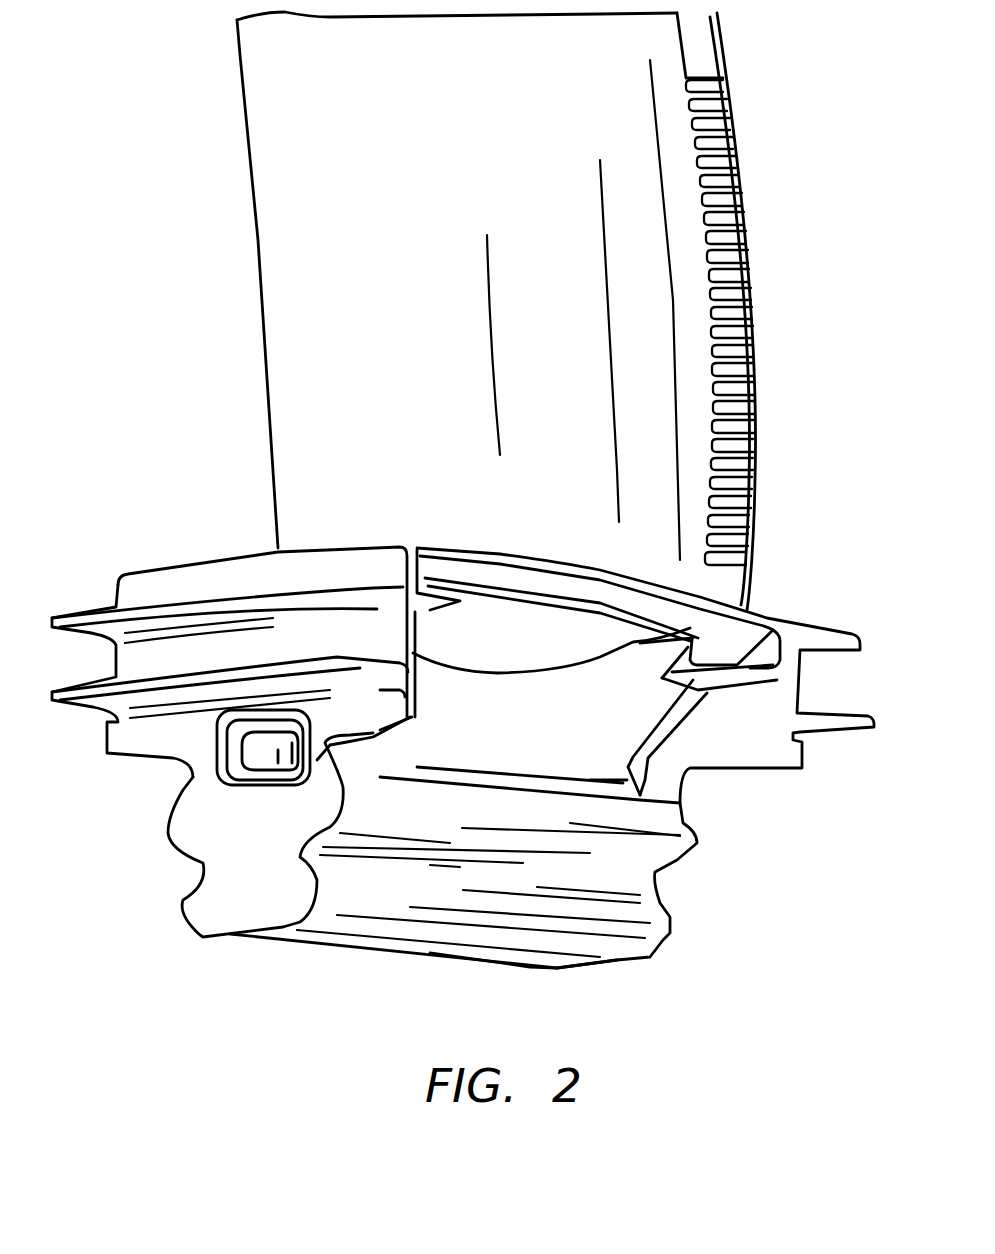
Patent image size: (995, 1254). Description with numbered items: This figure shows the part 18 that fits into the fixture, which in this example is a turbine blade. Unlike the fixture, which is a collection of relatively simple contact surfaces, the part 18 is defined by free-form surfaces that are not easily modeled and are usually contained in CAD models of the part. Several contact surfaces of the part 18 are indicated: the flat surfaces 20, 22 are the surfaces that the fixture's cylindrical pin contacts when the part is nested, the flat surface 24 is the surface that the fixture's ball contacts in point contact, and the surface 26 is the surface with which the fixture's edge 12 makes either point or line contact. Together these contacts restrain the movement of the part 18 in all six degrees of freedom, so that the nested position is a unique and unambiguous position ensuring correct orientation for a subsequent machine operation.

The edge 12 is at (241, 62).
The surface 26 is at (257, 235).
The part 18 is at (892, 405).
The flat surface 20 is at (647, 872).
The flat surface 22 is at (645, 903).
The flat surface 24 is at (270, 747).